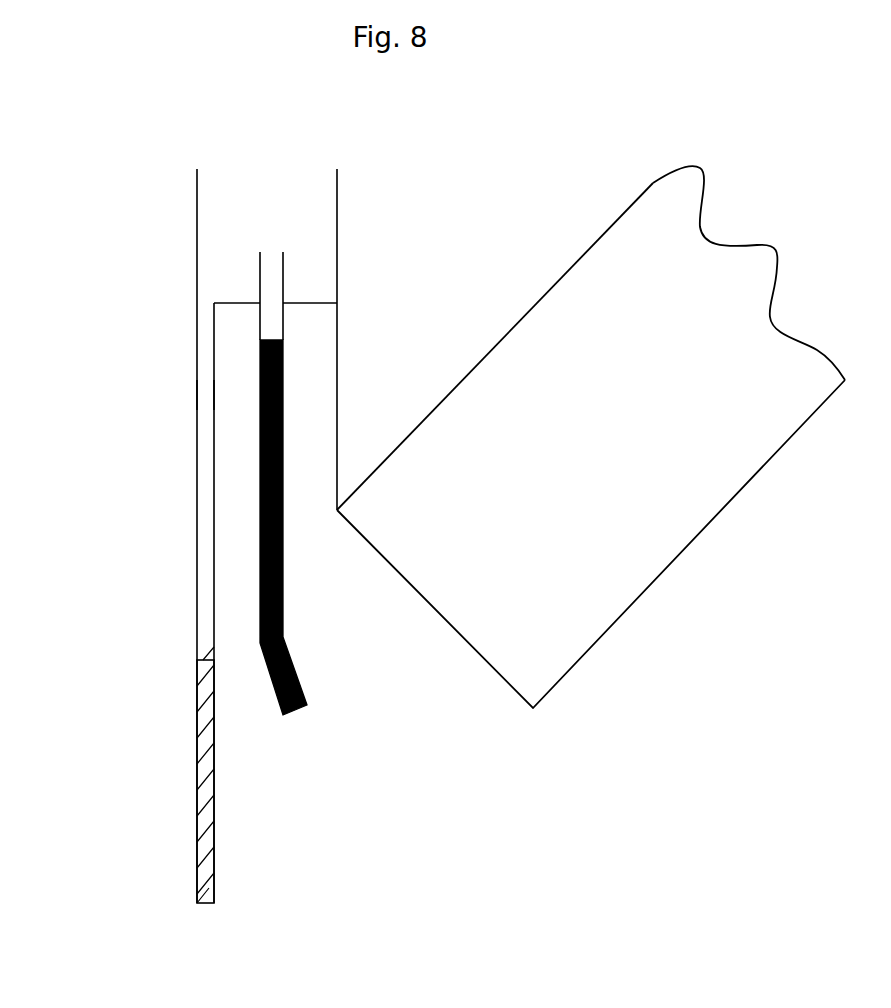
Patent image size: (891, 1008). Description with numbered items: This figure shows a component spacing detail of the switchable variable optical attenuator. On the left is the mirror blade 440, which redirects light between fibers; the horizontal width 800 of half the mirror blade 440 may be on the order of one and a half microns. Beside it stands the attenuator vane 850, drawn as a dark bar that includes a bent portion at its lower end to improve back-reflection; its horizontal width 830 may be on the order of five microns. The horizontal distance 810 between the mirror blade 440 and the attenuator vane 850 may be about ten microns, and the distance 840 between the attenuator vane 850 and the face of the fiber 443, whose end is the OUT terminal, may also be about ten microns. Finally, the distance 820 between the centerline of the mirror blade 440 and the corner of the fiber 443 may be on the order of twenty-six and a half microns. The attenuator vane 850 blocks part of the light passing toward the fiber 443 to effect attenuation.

The horizontal width of half the mirror blade 800 is at (255, 395).
The horizontal distance between the mirror blade and the attenuator vane 810 is at (235, 305).
The distance between the centerline of the mirror blade and the corner of the fiber 820 is at (197, 169).
The horizontal width of the attenuator vane 830 is at (323, 252).
The distance between the attenuator vane and the face of the fiber 840 is at (310, 307).
The attenuator vane 850 is at (306, 708).
The mirror blade 440 is at (197, 753).
The fiber 443 is at (700, 532).